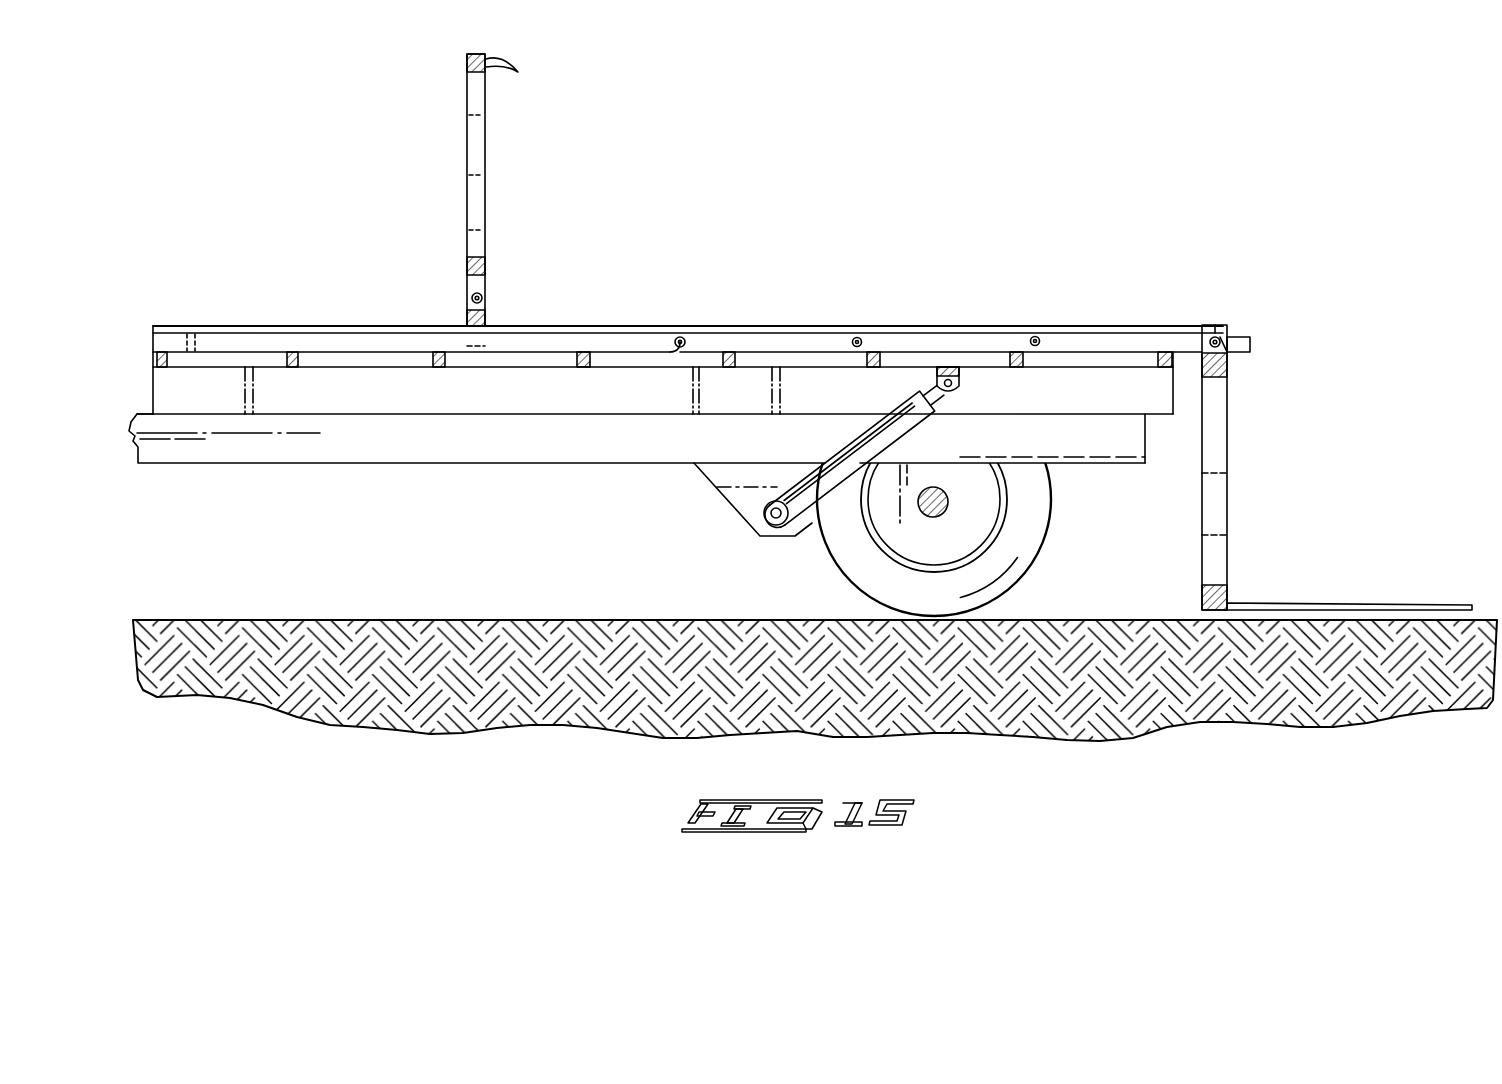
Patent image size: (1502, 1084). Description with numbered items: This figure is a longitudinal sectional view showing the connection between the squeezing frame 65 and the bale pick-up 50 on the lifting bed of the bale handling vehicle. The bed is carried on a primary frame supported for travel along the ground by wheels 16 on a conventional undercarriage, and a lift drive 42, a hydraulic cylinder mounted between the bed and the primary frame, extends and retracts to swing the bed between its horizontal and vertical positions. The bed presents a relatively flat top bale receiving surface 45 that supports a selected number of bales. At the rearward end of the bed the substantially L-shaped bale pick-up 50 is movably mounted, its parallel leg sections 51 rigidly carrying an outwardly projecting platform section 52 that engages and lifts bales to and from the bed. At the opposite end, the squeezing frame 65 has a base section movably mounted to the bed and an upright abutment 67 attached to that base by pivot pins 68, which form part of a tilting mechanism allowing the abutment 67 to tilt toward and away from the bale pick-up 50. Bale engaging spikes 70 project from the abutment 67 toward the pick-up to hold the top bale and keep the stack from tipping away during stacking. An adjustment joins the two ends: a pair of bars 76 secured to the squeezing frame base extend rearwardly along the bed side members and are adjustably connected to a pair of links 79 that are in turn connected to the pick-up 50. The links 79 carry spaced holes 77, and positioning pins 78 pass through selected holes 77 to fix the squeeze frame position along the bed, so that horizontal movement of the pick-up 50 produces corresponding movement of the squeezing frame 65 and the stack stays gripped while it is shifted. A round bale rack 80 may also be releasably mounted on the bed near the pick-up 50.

The wheels 16 is at (857, 560).
The lift drive 42 is at (810, 470).
The top bale receiving surface 45 is at (935, 327).
The bale pick-up 50 is at (1337, 430).
The leg sections 51 is at (1213, 437).
The platform section 52 is at (1345, 604).
The squeezing frame 65 is at (500, 200).
The upright abutment 67 is at (477, 215).
The pivot pins 68 is at (468, 297).
The bale engaging spikes 70 is at (497, 72).
The bars 76 is at (591, 344).
The spaced holes 77 is at (855, 337).
The positioning pins 78 is at (677, 336).
The links 79 is at (758, 340).
The round bale racks 80 is at (1216, 336).